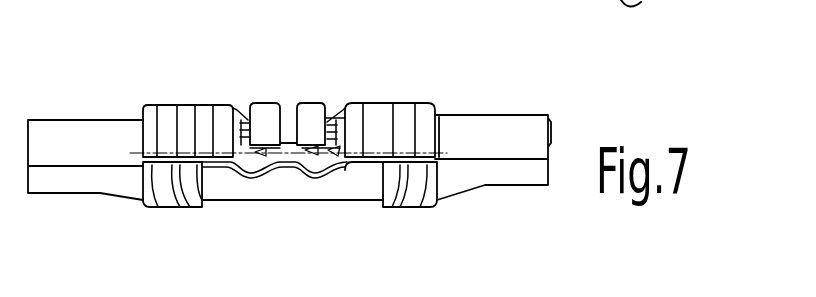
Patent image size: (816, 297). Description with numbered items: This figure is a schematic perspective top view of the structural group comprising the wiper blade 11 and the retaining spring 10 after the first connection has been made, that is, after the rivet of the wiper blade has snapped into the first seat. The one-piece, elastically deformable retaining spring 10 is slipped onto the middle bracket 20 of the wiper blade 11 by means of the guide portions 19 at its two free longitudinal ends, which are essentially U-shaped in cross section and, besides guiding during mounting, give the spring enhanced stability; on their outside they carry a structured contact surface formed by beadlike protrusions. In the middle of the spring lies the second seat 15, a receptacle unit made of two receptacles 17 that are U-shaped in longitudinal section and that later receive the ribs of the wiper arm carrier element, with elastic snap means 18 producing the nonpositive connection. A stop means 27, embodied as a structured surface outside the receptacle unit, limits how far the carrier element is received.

The retaining spring 10 is at (405, 115).
The wiper blade 11 is at (517, 130).
The second seat 15 is at (244, 100).
The receptacle 17 is at (250, 178).
The elastic snap means 18 is at (285, 97).
The guide portion 19 is at (172, 193).
The middle bracket 20 is at (100, 146).
The stop means 27 is at (170, 122).